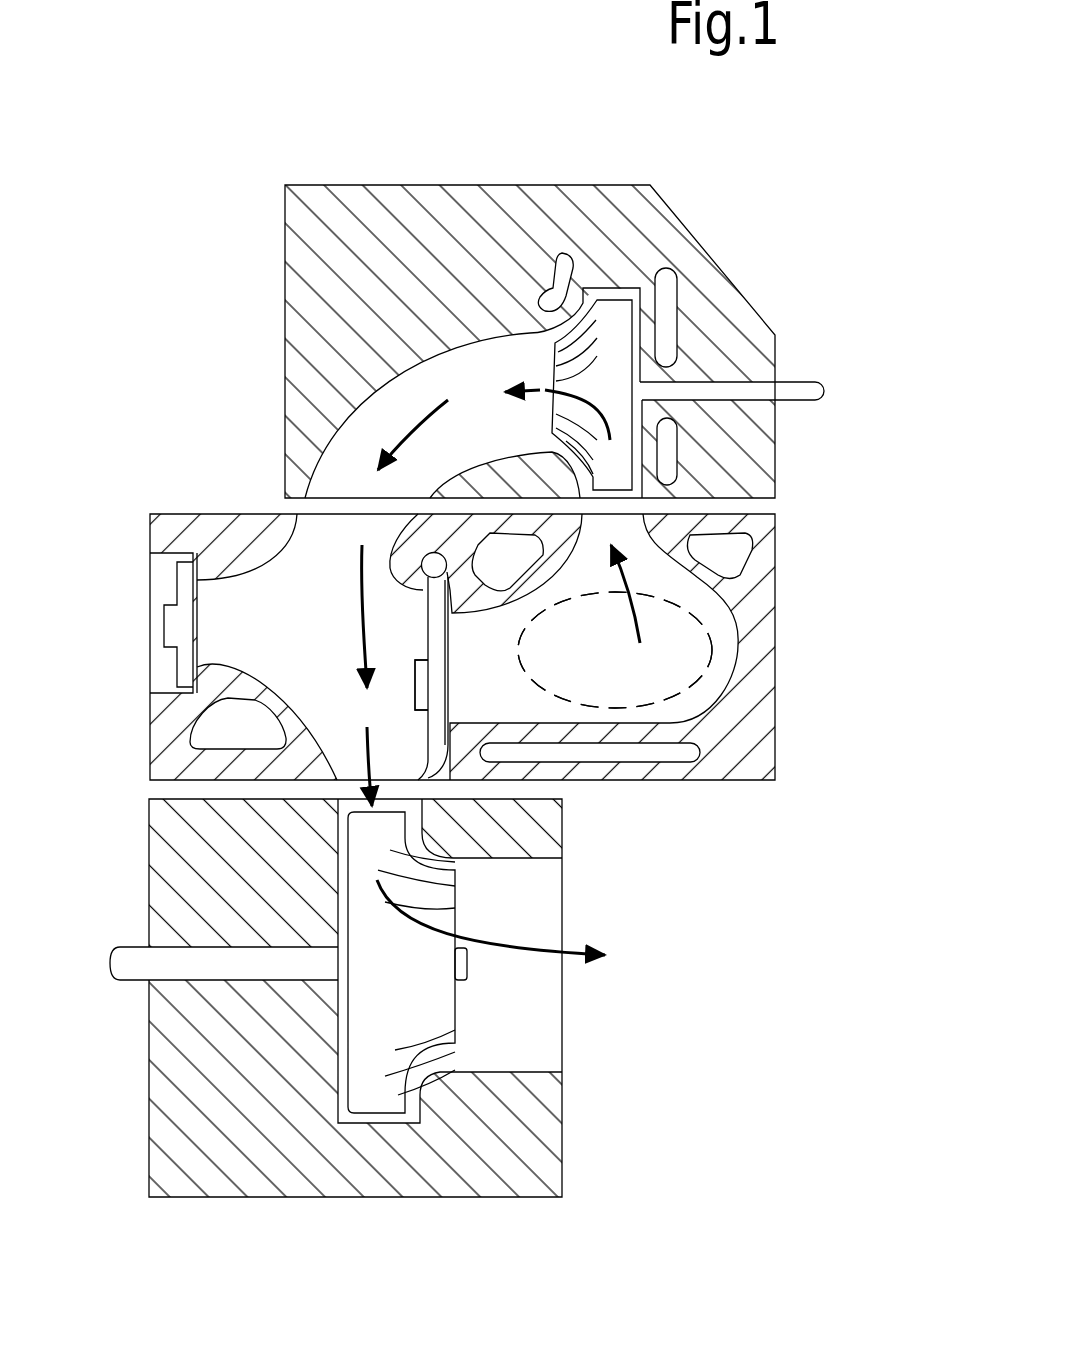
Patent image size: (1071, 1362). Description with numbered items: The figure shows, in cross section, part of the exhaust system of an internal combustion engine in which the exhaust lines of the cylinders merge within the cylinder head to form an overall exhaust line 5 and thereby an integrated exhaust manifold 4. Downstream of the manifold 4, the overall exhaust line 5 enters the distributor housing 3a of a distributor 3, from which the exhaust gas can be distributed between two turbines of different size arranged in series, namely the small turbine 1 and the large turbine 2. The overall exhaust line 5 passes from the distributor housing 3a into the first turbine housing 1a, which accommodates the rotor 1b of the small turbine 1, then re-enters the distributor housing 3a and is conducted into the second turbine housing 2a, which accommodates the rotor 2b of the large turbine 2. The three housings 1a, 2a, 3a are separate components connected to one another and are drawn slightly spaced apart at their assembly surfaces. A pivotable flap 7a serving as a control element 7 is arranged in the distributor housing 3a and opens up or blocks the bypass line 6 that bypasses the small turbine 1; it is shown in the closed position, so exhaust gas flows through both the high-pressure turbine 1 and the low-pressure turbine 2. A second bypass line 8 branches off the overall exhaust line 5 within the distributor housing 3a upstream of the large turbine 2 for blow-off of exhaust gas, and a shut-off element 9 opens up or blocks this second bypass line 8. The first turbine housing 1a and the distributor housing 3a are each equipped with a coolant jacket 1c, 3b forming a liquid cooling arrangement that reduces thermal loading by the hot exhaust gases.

The small turbine 1 is at (278, 158).
The first turbine housing 1a is at (655, 232).
The rotor 1b is at (615, 345).
The coolant jacket 1c is at (552, 275).
The large turbine 2 is at (632, 1153).
The second turbine housing 2a is at (468, 1160).
The rotor 2b is at (358, 1027).
The distributor 3 is at (135, 475).
The distributor housing 3a is at (240, 545).
The coolant jacket 3b is at (495, 548).
The integrated exhaust manifold 4 is at (677, 647).
The overall exhaust line 5 is at (615, 650).
The bypass line 6 is at (490, 671).
The control element 7 is at (437, 682).
The flap 7a is at (421, 685).
The second bypass line 8 is at (240, 646).
The shut-off element 9 is at (175, 620).